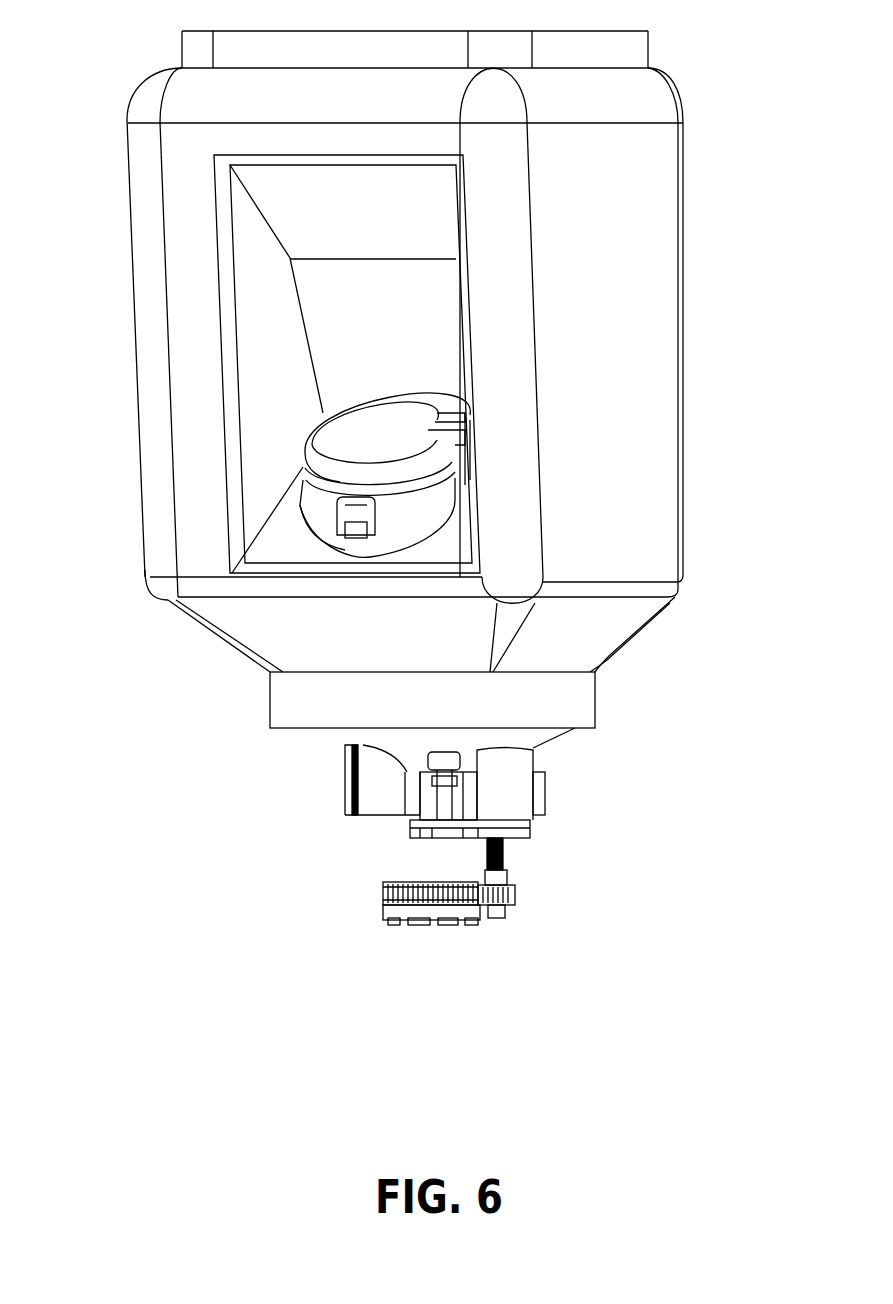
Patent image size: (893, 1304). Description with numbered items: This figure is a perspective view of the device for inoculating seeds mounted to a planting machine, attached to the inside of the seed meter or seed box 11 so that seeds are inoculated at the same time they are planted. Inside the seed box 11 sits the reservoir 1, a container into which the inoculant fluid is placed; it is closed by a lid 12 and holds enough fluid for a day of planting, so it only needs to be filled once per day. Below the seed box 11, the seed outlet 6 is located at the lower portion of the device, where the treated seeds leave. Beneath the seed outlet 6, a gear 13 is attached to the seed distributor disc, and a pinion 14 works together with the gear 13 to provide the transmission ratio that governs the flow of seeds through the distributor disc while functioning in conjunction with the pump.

The seed box 11 is at (620, 156).
The lid 12 is at (340, 428).
The reservoir 1 is at (446, 507).
The seed outlet 6 is at (349, 761).
The gear 13 is at (369, 889).
The pinion 14 is at (519, 852).